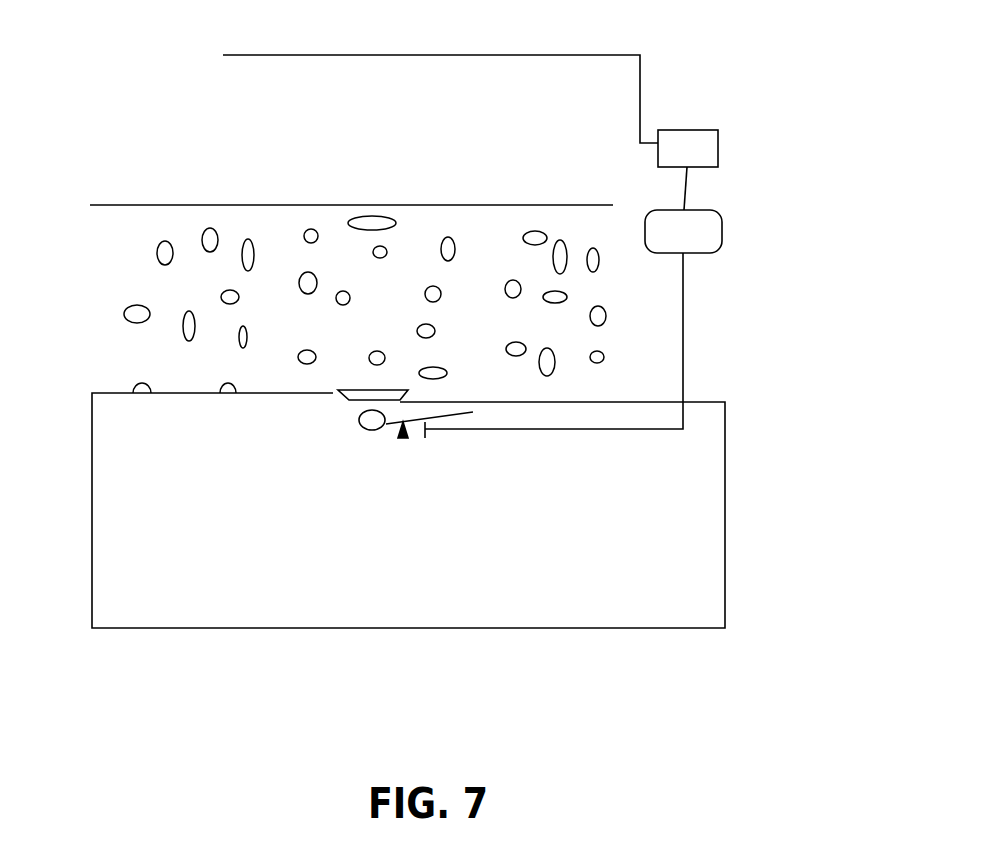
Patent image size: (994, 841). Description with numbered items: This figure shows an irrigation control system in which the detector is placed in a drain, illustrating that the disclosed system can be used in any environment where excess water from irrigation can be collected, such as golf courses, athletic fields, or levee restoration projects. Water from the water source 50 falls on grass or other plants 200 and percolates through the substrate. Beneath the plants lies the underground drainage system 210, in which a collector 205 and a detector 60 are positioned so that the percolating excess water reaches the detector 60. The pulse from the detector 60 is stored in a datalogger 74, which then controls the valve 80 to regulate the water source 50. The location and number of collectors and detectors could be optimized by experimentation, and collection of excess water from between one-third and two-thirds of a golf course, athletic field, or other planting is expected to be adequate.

The water source 50 is at (423, 55).
The valve 80 is at (707, 147).
The datalogger 74 is at (722, 232).
The grass or other plants 200 is at (368, 205).
The collector 205 is at (343, 395).
The detector 60 is at (400, 438).
The underground drainage system 210 is at (408, 559).